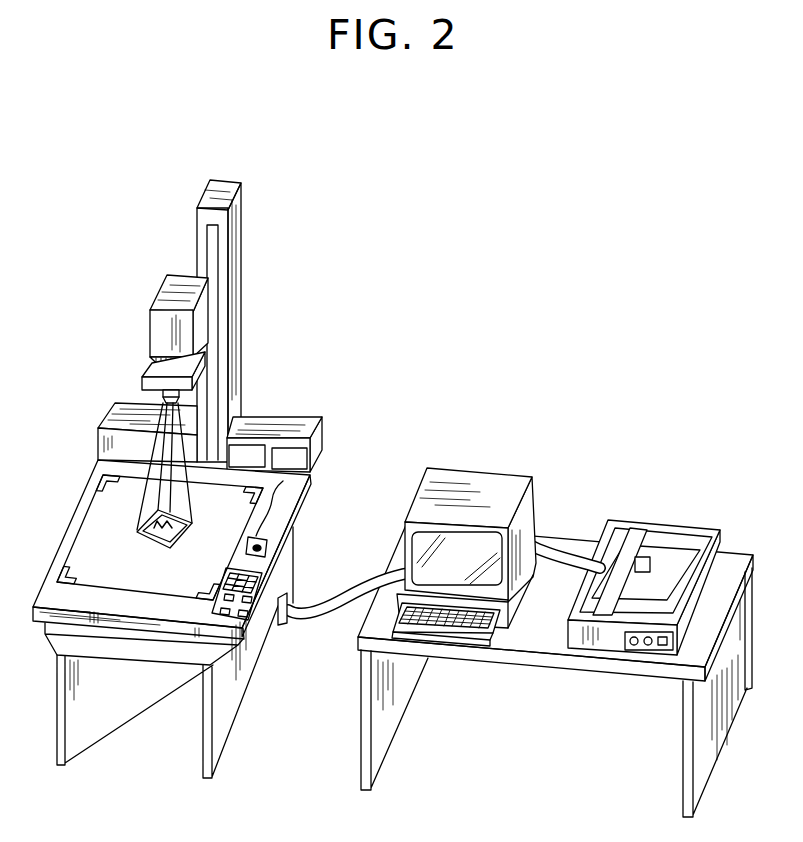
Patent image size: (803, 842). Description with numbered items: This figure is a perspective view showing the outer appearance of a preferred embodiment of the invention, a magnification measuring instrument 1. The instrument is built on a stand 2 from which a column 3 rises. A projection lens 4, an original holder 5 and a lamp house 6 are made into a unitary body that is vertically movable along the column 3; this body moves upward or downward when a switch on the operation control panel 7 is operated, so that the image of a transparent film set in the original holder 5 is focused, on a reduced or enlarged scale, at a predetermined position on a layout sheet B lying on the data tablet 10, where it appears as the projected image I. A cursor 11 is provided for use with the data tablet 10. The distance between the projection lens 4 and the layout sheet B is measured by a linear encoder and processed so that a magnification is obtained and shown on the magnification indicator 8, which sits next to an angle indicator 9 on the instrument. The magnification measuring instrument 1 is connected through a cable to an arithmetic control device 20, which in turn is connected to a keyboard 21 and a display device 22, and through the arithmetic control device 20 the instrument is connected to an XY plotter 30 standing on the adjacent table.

The magnification measuring instrument 1 is at (305, 337).
The stand 2 is at (93, 478).
The column 3 is at (238, 248).
The projection lens 4 is at (162, 398).
The original holder 5 is at (152, 368).
The lamp house 6 is at (170, 296).
The operation control panel 7 is at (243, 608).
The magnification indicator 8 is at (254, 447).
The angle indicator 9 is at (283, 452).
The data tablet 10 is at (58, 580).
The cursor 11 is at (268, 544).
The arithmetic control device 20 is at (542, 540).
The keyboard 21 is at (497, 640).
The display device 22 is at (485, 478).
The XY plotter 30 is at (647, 482).
The layout sheet B is at (95, 535).
The projected image I is at (155, 547).